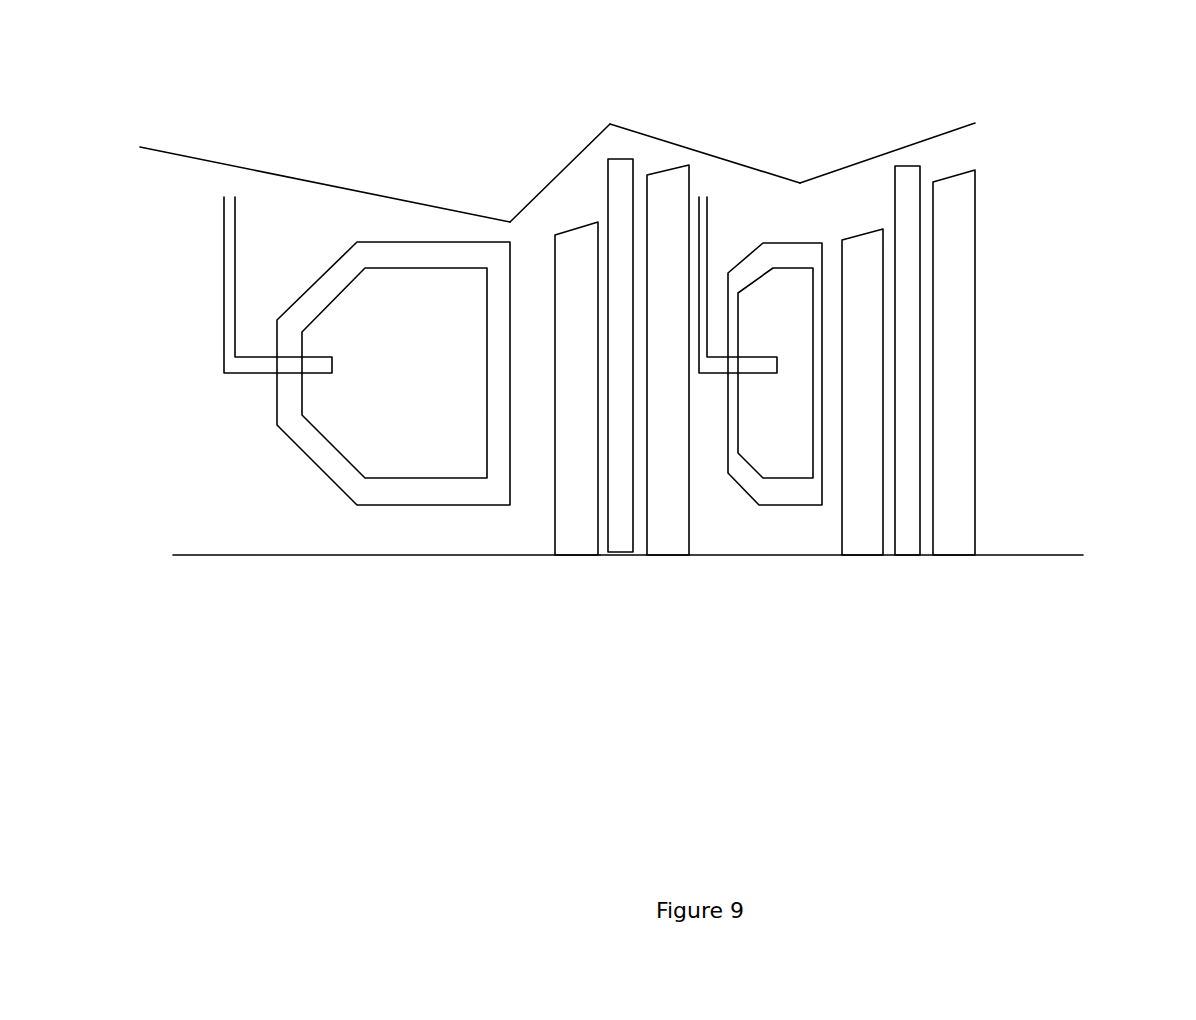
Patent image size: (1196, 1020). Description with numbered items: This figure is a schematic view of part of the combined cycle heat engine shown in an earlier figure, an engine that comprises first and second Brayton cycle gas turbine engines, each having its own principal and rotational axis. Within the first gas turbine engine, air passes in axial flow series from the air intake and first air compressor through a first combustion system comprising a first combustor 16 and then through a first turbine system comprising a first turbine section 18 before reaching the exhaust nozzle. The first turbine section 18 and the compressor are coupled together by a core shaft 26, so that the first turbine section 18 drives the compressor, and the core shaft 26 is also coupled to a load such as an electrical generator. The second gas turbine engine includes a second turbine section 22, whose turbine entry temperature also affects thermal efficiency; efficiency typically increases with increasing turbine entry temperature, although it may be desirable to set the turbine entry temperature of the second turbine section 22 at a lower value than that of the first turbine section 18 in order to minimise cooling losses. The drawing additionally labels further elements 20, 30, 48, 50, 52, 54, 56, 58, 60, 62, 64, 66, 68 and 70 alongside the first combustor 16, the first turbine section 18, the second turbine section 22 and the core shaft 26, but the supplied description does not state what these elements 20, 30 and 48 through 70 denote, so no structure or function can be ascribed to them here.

The first combustor 16 is at (332, 197).
The first turbine section 18 is at (577, 122).
The casing valley portion 20 is at (740, 193).
The second turbine section 22 is at (883, 122).
The core shaft 26 is at (307, 560).
The base line / substrate 30 is at (1030, 557).
The inner octagonal wall of first cell 48 is at (393, 473).
The inner octagonal wall of second cell 50 is at (793, 478).
The outer octagonal wall of first cell 52 is at (468, 507).
The outer octagonal wall of second cell 54 is at (777, 507).
The first L-shaped member 56 is at (235, 375).
The second L-shaped member 58 is at (738, 363).
The first slanted bar 60 is at (575, 523).
The second slanted bar 62 is at (672, 505).
The narrow rectangular bar 64 is at (620, 523).
The third slanted bar 66 is at (863, 523).
The right slanted bar 68 is at (963, 400).
The right narrow rectangular bar 70 is at (908, 323).